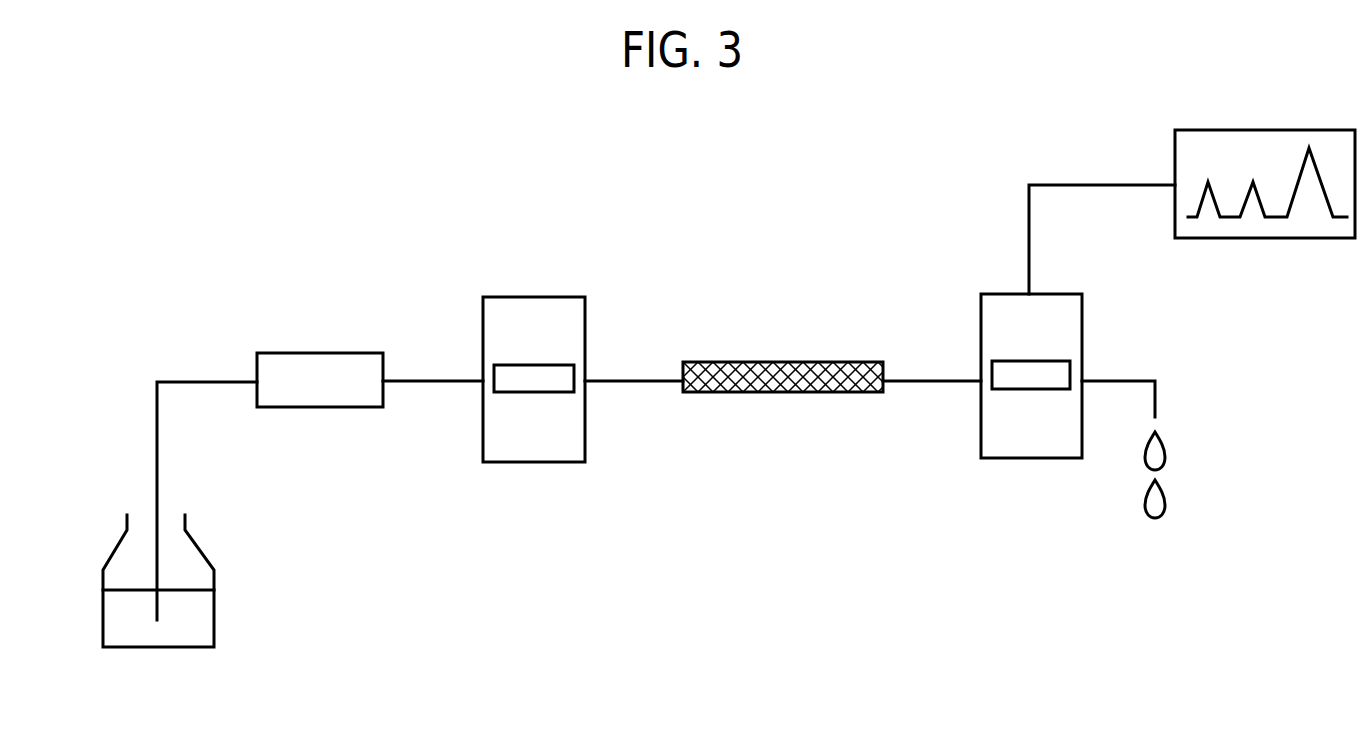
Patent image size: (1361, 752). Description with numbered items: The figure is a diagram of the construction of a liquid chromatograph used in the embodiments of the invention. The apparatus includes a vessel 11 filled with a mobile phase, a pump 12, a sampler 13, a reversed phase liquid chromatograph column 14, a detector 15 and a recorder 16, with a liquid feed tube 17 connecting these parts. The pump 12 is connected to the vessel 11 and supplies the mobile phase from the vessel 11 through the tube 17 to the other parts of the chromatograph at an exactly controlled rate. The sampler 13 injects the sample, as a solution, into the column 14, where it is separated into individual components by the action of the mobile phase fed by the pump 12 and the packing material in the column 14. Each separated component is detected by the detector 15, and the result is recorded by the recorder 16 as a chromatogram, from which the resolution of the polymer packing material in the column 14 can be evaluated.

The vessel 11 is at (105, 563).
The pump 12 is at (362, 353).
The sampler 13 is at (580, 297).
The column 14 is at (857, 362).
The detector 15 is at (998, 458).
The recorder 16 is at (1197, 238).
The liquid feed tube 17 is at (198, 383).